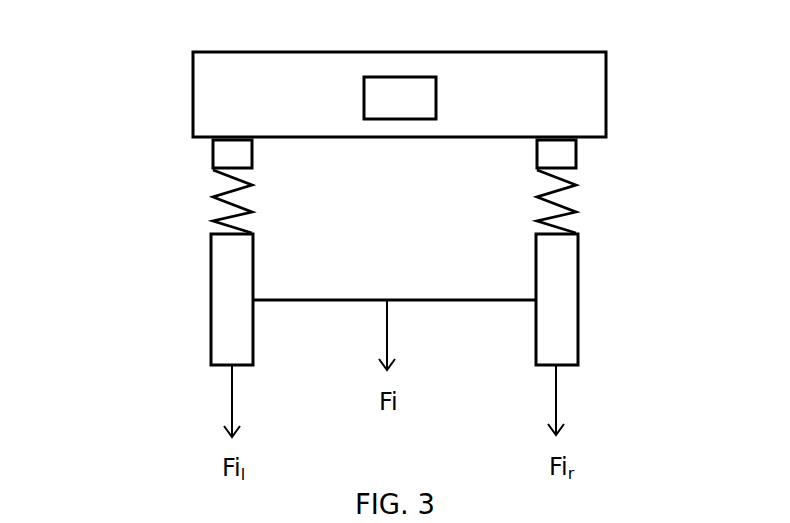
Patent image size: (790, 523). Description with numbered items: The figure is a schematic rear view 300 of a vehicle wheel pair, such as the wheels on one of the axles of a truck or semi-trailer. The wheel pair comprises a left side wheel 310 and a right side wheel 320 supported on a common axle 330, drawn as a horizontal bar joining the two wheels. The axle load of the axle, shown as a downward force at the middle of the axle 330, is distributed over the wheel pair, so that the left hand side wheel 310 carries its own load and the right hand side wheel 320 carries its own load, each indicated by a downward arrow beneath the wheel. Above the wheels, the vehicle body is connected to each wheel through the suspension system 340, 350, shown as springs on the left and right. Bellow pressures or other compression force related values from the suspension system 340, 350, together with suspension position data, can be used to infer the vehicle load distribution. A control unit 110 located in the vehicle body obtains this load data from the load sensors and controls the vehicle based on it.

The rear view 300 is at (88, 55).
The control unit 110 is at (400, 98).
The left side wheel 310 is at (211, 320).
The right side wheel 320 is at (578, 291).
The axle 330 is at (352, 300).
The suspension system 340 is at (213, 197).
The suspension system 350 is at (576, 183).